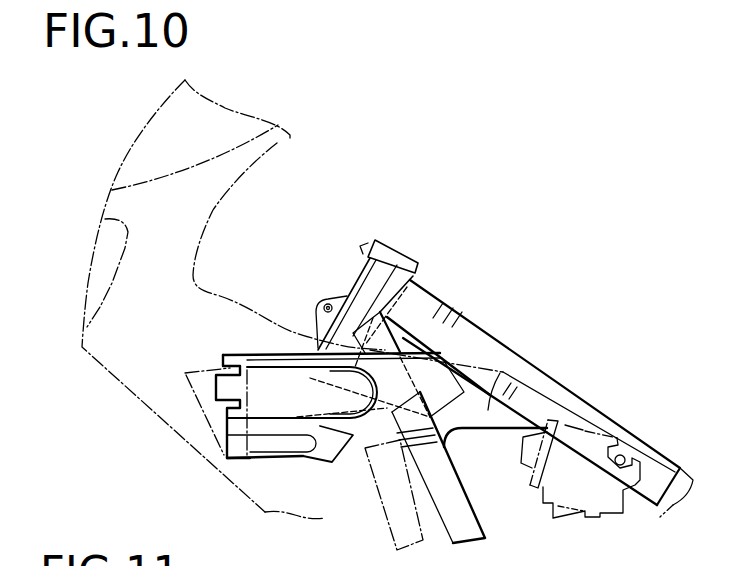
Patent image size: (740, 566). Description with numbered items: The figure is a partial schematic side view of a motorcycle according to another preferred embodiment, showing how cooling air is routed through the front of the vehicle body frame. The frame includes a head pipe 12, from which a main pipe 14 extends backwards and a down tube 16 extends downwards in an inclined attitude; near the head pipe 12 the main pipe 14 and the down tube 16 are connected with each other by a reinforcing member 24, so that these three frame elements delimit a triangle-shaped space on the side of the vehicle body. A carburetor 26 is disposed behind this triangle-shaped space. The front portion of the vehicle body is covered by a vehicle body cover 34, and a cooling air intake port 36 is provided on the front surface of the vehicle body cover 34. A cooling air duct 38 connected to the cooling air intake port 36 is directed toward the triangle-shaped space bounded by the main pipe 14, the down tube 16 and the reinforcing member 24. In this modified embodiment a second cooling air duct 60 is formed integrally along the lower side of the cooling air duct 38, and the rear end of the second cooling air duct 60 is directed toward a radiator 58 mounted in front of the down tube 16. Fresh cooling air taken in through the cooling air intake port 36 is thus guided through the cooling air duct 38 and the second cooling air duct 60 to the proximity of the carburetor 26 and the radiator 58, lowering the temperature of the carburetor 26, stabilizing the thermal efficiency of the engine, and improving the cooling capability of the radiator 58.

The head pipe 12 is at (388, 248).
The main pipe 14 is at (484, 331).
The down tube 16 is at (475, 528).
The reinforcing member 24 is at (503, 372).
The carburetor 26 is at (612, 506).
The vehicle body cover 34 is at (207, 227).
The cooling air intake port 36 is at (212, 410).
The cooling air duct 38 is at (495, 421).
The radiator 58 is at (393, 528).
The second cooling air duct 60 is at (325, 452).